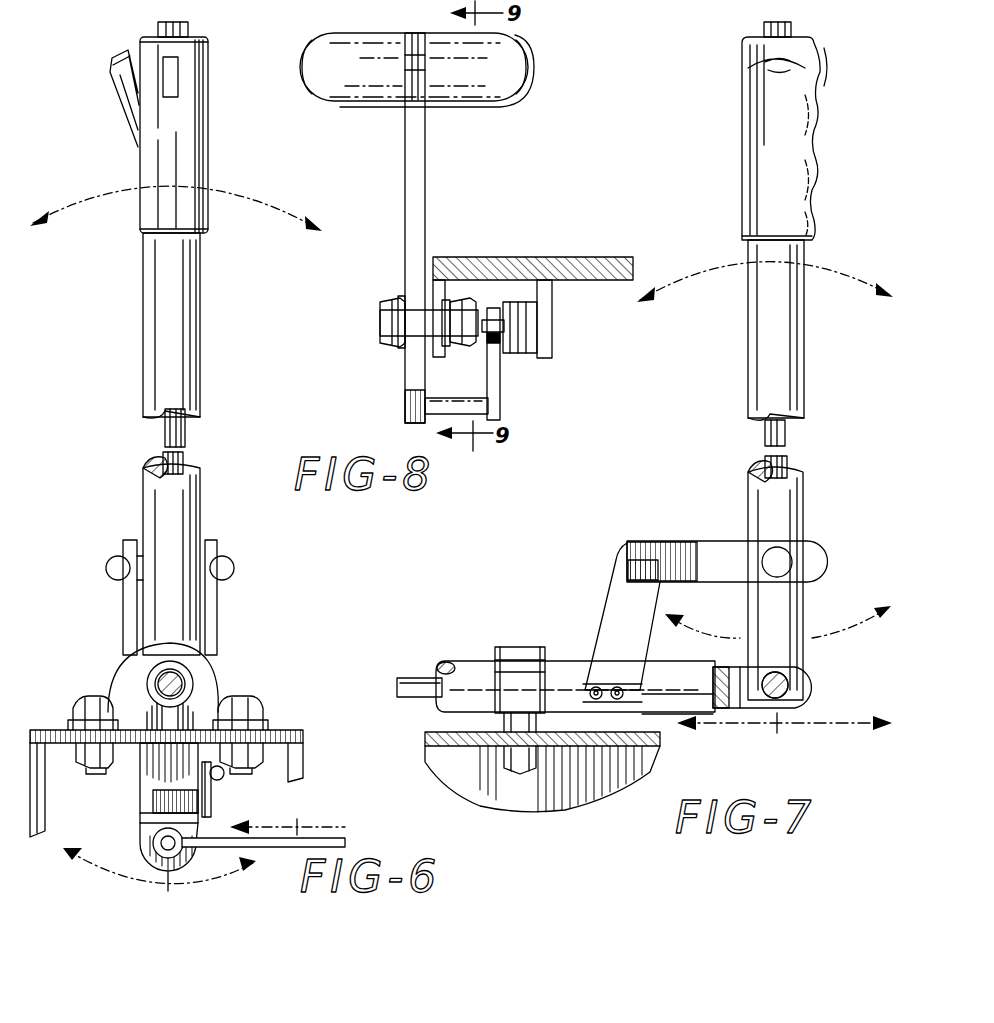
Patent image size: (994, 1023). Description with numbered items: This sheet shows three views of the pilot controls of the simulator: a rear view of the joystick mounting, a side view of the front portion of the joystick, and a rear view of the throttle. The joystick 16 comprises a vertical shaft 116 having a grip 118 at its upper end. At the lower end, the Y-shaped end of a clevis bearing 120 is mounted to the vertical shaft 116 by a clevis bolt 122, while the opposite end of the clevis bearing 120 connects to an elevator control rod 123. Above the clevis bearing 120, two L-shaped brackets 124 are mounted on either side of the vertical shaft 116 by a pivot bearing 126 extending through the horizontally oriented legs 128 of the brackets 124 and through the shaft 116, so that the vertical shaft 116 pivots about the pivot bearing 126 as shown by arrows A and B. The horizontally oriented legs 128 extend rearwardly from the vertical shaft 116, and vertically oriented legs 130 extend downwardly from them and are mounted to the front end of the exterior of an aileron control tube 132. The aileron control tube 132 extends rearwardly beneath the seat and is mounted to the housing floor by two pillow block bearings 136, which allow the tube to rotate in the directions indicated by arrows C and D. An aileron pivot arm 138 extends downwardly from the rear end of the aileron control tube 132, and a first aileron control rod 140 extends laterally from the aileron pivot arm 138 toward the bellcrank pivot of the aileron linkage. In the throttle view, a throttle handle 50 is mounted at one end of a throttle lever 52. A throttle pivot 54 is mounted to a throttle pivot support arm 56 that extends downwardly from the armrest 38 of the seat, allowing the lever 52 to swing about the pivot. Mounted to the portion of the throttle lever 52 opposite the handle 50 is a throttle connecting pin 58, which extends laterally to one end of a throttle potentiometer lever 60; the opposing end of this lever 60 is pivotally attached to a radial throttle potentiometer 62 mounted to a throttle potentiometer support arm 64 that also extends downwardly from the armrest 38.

In FIG. 6, the joystick 16 is at (120, 288).
In FIG. 7, the joystick 16 is at (730, 188).
In FIG. 8, the armrest 38 is at (575, 250).
In FIG. 8, the throttle handle 50 is at (516, 58).
In FIG. 8, the throttle lever 52 is at (420, 150).
In FIG. 8, the throttle pivot 54 is at (367, 325).
In FIG. 8, the throttle pivot support arm 56 is at (434, 268).
In FIG. 8, the throttle connecting pin 58 is at (470, 379).
In FIG. 8, the throttle potentiometer lever 60 is at (500, 400).
In FIG. 8, the radial throttle potentiometer 62 is at (525, 353).
In FIG. 8, the throttle potentiometer support arm 64 is at (552, 325).
In FIG. 6, the vertical shaft 116 is at (200, 302).
In FIG. 7, the vertical shaft 116 is at (804, 326).
In FIG. 6, the grip 118 is at (212, 64).
In FIG. 7, the grip 118 is at (800, 162).
In FIG. 7, the clevis bearing 120 is at (726, 672).
In FIG. 7, the clevis bolt 122 is at (788, 676).
In FIG. 6, the elevator control rod 123 is at (190, 670).
In FIG. 6, the L-shaped brackets 124 is at (218, 620).
In FIG. 7, the L-shaped brackets 124 is at (828, 554).
In FIG. 6, the pivot bearing 126 is at (232, 570).
In FIG. 7, the pivot bearing 126 is at (792, 548).
In FIG. 7, the horizontally oriented legs 128 is at (706, 514).
In FIG. 7, the vertically oriented legs 130 is at (610, 628).
In FIG. 6, the aileron control tube 132 is at (148, 680).
In FIG. 7, the aileron control tube 132 is at (462, 662).
In FIG. 6, the pillow block bearings 136 is at (213, 696).
In FIG. 6, the aileron pivot arm 138 is at (150, 774).
In FIG. 6, the first aileron control rod 140 is at (278, 848).